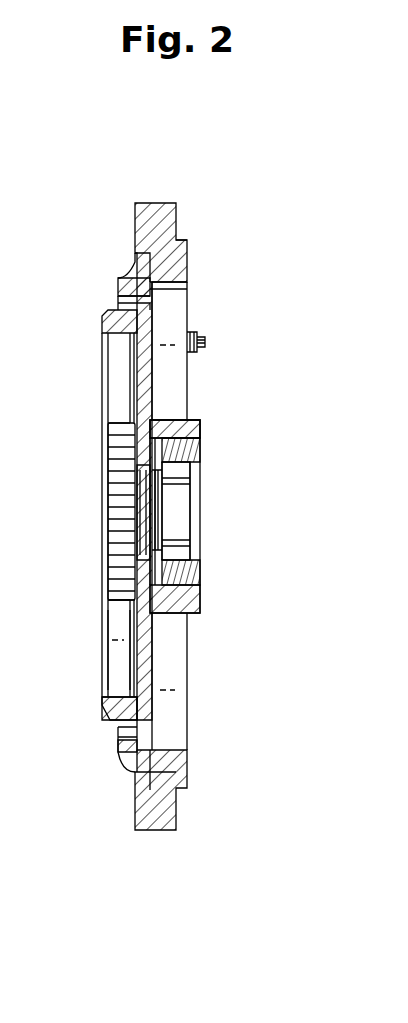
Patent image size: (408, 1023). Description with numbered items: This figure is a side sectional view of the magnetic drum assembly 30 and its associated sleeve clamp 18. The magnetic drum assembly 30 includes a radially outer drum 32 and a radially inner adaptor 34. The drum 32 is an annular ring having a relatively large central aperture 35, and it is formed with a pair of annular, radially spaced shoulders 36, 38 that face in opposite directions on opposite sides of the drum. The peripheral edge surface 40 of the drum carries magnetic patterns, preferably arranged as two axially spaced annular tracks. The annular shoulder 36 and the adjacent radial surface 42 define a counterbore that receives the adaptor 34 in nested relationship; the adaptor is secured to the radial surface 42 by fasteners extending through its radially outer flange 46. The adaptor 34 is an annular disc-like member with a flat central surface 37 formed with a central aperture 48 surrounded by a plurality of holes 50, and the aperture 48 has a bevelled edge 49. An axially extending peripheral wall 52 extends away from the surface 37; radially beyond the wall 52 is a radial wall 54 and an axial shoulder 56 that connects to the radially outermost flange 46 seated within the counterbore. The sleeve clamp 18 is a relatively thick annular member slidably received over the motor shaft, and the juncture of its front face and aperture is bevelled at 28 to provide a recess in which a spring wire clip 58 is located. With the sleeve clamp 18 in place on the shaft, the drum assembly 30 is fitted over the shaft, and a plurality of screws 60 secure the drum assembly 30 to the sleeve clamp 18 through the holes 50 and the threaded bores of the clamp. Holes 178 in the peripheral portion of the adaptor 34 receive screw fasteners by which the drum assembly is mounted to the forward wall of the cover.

The magnetic drum assembly 30 is at (80, 205).
The peripheral edge surface 40 is at (150, 203).
The drum 32 is at (178, 222).
The annular shoulder 38 is at (180, 241).
The annular shoulder 36 is at (132, 265).
The radial surface 42 is at (118, 283).
The holes 178 is at (118, 304).
The peripheral wall 52 is at (115, 357).
The adaptor 34 is at (128, 385).
The central aperture 35 is at (187, 306).
The holes 50 is at (160, 422).
The sleeve clamp 18 is at (201, 428).
The screws 60 is at (108, 450).
The central aperture 48 is at (137, 512).
The bevelled edge 28 is at (160, 497).
The spring wire clip 58 is at (162, 546).
The bevelled edge 49 is at (108, 615).
The flat central surface 37 is at (112, 675).
The radial wall 54 is at (112, 752).
The axial shoulder 56 is at (116, 762).
The radially outer flange 46 is at (135, 790).